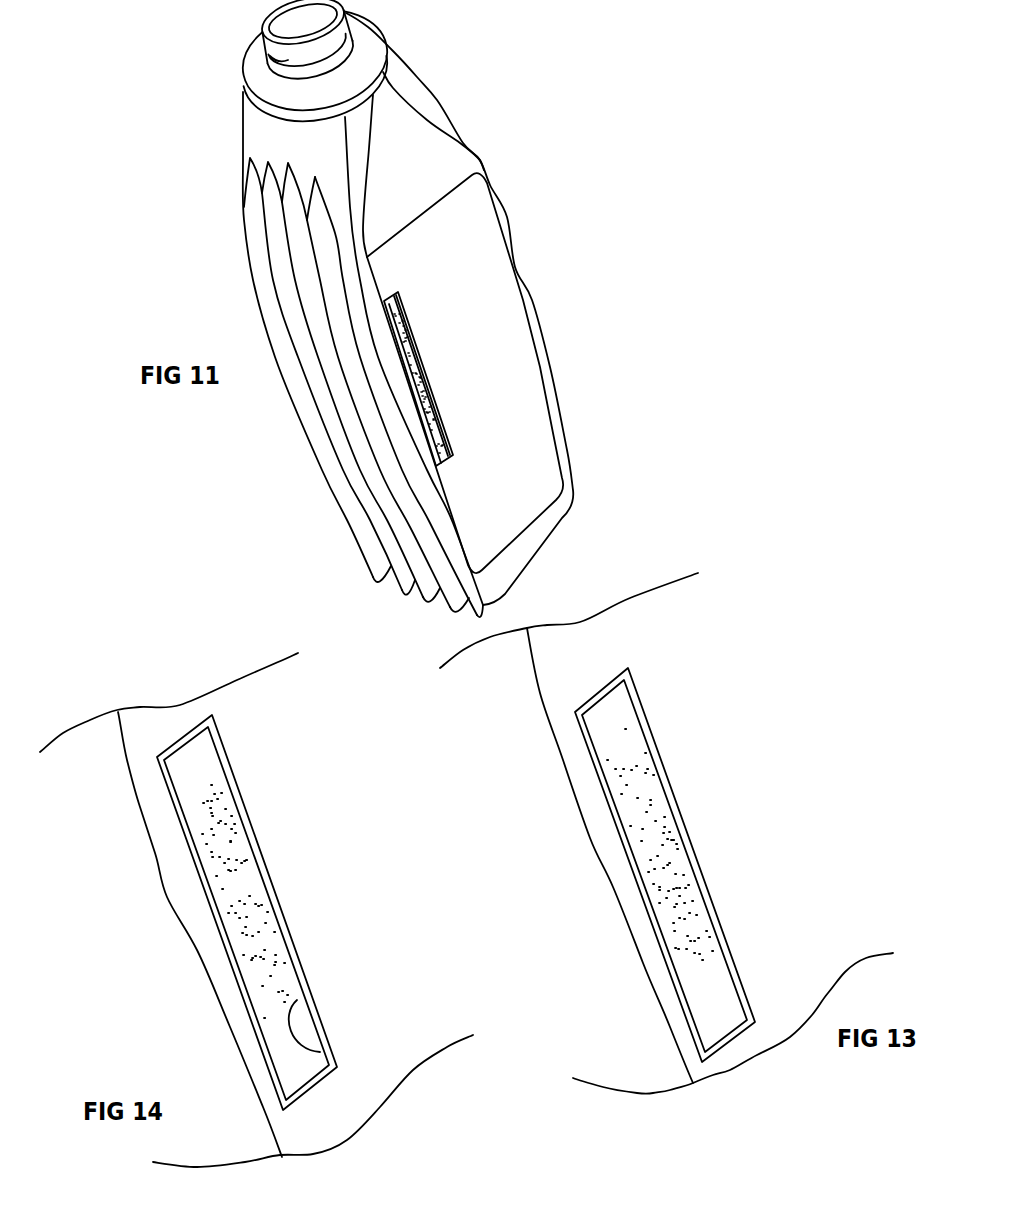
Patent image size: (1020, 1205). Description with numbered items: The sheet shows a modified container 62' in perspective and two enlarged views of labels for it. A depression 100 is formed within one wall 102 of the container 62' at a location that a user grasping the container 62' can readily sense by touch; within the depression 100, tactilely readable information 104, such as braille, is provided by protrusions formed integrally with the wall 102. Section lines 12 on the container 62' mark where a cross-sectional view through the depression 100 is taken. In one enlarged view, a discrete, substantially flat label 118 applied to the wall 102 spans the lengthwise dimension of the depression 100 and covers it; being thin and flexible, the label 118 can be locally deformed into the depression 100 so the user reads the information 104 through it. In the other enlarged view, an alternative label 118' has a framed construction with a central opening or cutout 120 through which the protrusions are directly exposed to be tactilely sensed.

In FIG. 11, the container 62' is at (403, 308).
In FIG. 11, the depression 100 is at (407, 300).
In FIG. 11, the wall 102 is at (512, 437).
In FIG. 11, the information 104 is at (440, 407).
In FIG. 11, the section line 12 is at (365, 280).
In FIG. 13, the discrete label 118 is at (676, 855).
In FIG. 14, the label 118' is at (267, 912).
In FIG. 14, the central opening/cutout 120 is at (320, 1052).